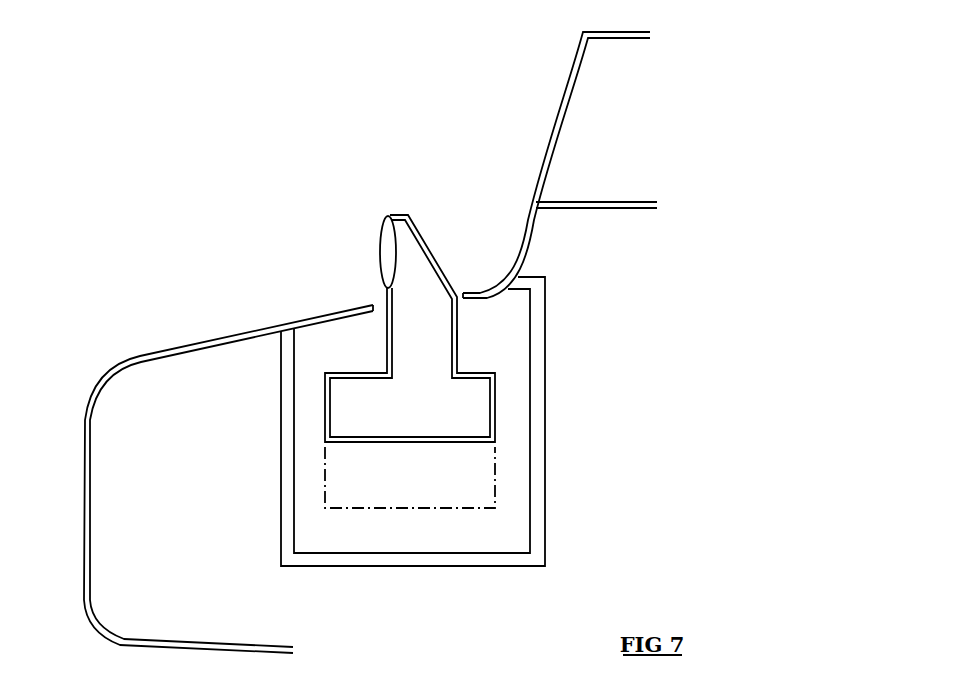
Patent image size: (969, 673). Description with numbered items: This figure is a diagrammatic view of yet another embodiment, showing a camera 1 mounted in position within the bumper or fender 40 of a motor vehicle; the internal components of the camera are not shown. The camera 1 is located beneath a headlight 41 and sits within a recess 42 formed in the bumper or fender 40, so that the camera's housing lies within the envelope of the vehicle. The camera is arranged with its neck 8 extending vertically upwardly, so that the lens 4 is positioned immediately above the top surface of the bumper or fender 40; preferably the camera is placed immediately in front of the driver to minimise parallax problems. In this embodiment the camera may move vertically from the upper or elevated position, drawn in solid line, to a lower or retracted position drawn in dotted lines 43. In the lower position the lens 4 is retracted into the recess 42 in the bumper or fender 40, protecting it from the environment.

The camera 1 is at (499, 338).
The lens 4 is at (382, 248).
The neck 8 is at (459, 347).
The bumper or fender 40 is at (142, 387).
The headlight 41 is at (542, 135).
The recess 42 is at (545, 427).
The dotted lines 43 is at (495, 477).